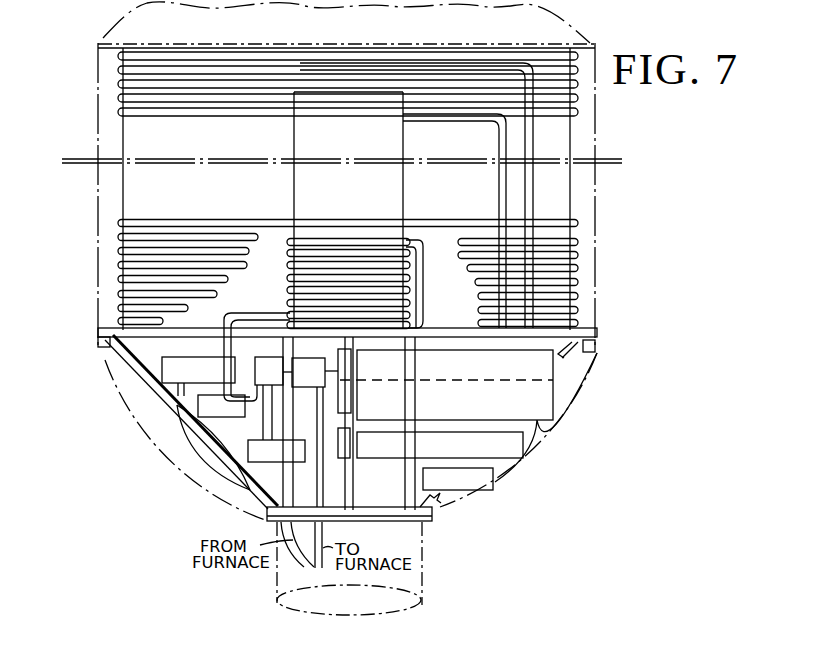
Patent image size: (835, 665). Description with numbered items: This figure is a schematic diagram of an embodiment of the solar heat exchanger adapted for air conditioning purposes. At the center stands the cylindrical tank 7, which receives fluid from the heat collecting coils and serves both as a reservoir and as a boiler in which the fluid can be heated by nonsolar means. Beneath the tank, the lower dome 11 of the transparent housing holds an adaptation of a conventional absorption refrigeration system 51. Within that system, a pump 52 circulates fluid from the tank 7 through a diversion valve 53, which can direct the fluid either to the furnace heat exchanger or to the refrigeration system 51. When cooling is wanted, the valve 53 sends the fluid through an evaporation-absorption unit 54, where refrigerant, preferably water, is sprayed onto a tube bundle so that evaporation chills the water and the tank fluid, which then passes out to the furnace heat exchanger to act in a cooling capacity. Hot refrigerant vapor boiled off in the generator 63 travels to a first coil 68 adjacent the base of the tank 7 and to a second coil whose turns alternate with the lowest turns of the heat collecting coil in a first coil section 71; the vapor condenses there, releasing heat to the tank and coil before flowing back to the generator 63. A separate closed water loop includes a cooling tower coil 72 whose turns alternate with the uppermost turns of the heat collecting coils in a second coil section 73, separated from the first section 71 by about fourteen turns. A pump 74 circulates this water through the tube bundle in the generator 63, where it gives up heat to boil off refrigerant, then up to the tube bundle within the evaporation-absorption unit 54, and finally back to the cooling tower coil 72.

The cylindrical tank 7 is at (294, 143).
The lower dome 11 is at (153, 450).
The absorption refrigeration system 51 is at (562, 412).
The pump 52 is at (234, 416).
The diversion valve 53 is at (281, 383).
The evaporation-absorption unit 54 is at (481, 384).
The generator 63 is at (473, 460).
The first coil 68 is at (289, 281).
The first coil section 71 is at (105, 258).
The cooling tower coil 72 is at (495, 58).
The second coil section 73 is at (104, 77).
The pump 74 is at (471, 491).